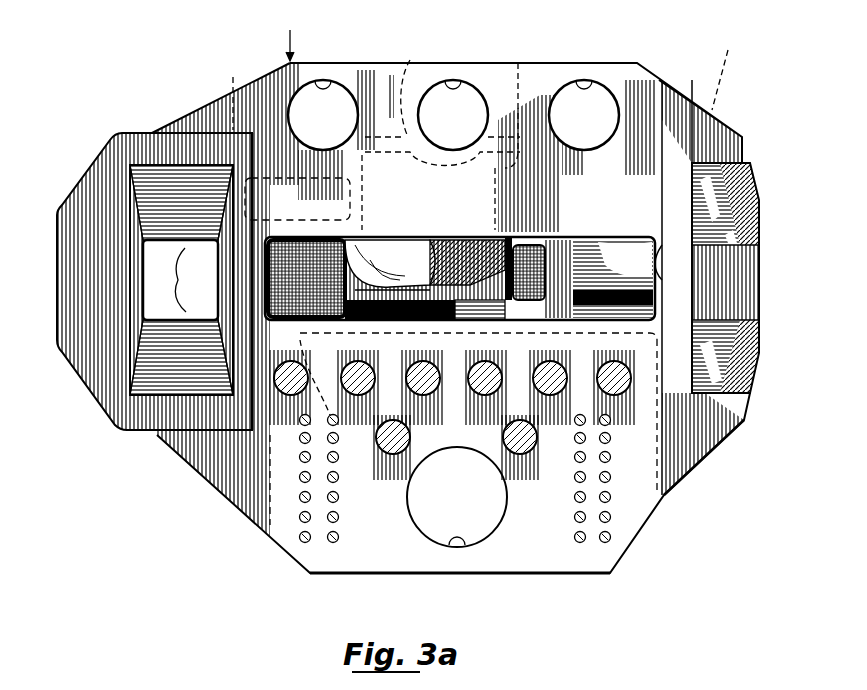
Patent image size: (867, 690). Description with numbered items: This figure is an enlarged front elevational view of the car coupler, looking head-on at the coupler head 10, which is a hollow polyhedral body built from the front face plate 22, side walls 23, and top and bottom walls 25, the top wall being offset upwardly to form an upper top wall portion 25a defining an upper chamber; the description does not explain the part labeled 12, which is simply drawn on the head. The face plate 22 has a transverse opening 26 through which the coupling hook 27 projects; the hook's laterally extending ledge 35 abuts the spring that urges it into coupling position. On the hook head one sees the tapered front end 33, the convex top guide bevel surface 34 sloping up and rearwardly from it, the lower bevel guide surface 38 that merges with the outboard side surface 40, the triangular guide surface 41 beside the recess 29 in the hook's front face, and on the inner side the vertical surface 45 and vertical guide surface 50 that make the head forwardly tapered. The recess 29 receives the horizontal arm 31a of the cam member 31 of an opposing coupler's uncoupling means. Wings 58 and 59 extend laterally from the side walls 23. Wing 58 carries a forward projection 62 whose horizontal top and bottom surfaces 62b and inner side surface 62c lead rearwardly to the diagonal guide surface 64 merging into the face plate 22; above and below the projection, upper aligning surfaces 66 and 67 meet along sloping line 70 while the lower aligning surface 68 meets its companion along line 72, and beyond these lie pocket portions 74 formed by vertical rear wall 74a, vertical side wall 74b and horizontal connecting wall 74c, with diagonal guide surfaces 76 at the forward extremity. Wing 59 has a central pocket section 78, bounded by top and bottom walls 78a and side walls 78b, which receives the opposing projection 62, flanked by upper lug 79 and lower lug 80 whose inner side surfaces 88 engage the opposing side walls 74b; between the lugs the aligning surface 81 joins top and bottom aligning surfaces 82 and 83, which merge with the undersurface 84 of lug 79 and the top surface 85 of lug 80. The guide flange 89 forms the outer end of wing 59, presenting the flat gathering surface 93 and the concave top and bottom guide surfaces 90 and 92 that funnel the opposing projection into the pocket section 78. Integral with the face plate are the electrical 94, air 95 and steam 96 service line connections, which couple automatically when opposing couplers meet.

The coupler head 10 is at (298, 35).
The base plate 12 is at (500, 63).
The front face plate 22 is at (300, 203).
The side walls 23 is at (487, 80).
The top and bottom walls 25 is at (410, 223).
The upper top wall portion 25a is at (519, 63).
The transverse opening 26 is at (700, 270).
The coupling hook 27 is at (330, 237).
The recess 29 is at (418, 330).
The cam member 31 is at (565, 260).
The horizontal arm 31a is at (512, 312).
The front end 33 is at (360, 250).
The top guide bevel surface 34 is at (385, 245).
The laterally extending ledge 35 is at (302, 237).
The lower bevel guide surface 38 is at (350, 322).
The outboard side surface 40 is at (330, 305).
The triangular guide surface 41 is at (345, 305).
The vertical surface 45 is at (472, 250).
The vertical guide surface 50 is at (420, 250).
The wing 58 is at (765, 265).
The wing 59 is at (60, 352).
The projection 62 is at (730, 282).
The top and bottom surfaces 62b is at (750, 215).
The inner side surface 62c is at (735, 335).
The diagonal guide surface 64 is at (757, 180).
The upper aligning surface 66 is at (722, 160).
The upper aligning surface 67 is at (755, 165).
The lower aligning surface 68 is at (720, 410).
The sloping line 70 is at (750, 225).
The sloping line 72 is at (745, 420).
The pocket portions 74 is at (720, 135).
The vertical rear wall 74a is at (700, 145).
The vertical side wall 74b is at (690, 135).
The horizontal connecting wall 74c is at (712, 135).
The diagonal guide surfaces 76 is at (665, 90).
The pocket section 78 is at (160, 278).
The top and bottom walls 78a is at (125, 172).
The side walls 78b is at (130, 290).
The upper lug portion 79 is at (165, 160).
The lower lug portion 80 is at (170, 440).
The aligning surface 81 is at (210, 160).
The top aligning surface 82 is at (160, 190).
The bottom aligning surface 83 is at (150, 432).
The undersurface of upper lug 84 is at (175, 195).
The top surface of bottom lug 85 is at (190, 440).
The inner side surface 88 is at (235, 135).
The guide flange 89 is at (58, 207).
The top guide surface 90 is at (140, 200).
The bottom guide surface 92 is at (140, 375).
The aligning and gathering surface 93 is at (80, 286).
The electrical line connections 94 is at (338, 493).
The air line connections 95 is at (325, 80).
The steam line connection 96 is at (457, 547).